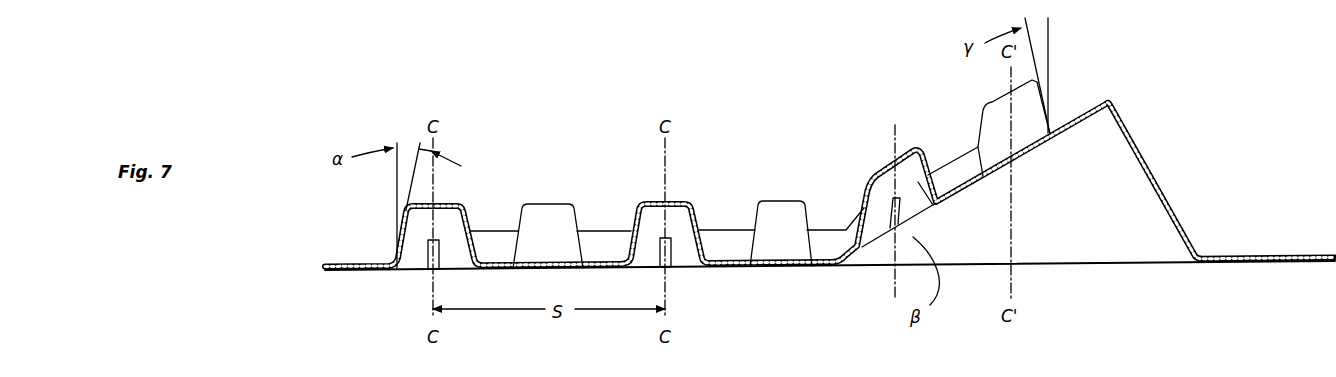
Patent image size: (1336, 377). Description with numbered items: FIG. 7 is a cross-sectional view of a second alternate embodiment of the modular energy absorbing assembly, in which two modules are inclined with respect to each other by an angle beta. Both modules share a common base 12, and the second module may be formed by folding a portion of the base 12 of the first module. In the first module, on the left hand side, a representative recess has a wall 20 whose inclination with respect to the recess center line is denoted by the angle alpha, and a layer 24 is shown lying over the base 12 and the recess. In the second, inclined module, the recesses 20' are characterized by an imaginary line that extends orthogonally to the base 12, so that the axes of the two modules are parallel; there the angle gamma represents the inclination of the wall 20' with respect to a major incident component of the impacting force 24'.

The base 12 is at (847, 0).
The wall 20 is at (584, 262).
The band 24 is at (830, 185).
The recess 20' is at (960, 151).
The major incident component of the impacting force 24' is at (1084, 76).